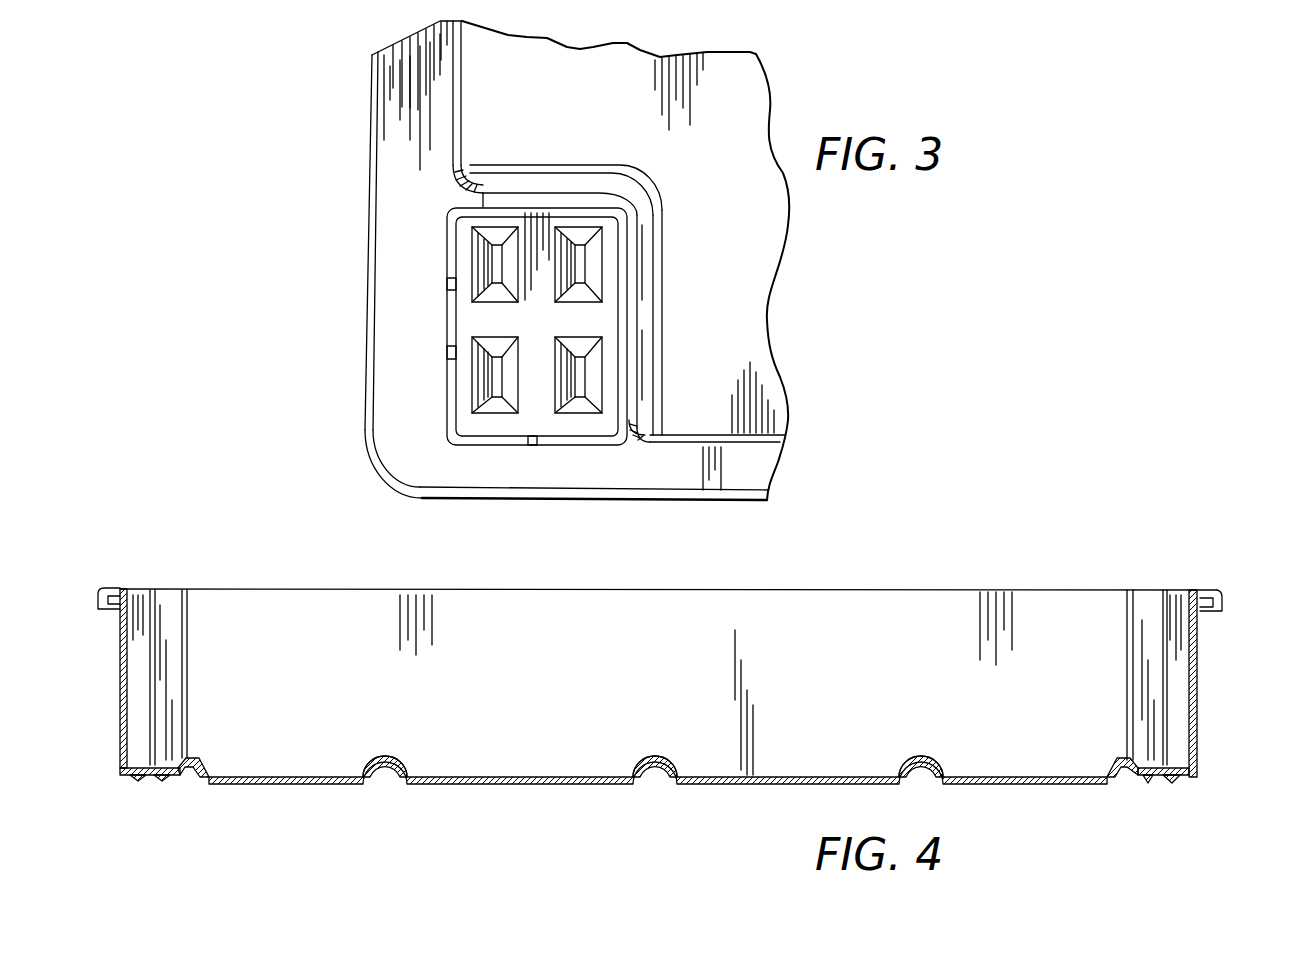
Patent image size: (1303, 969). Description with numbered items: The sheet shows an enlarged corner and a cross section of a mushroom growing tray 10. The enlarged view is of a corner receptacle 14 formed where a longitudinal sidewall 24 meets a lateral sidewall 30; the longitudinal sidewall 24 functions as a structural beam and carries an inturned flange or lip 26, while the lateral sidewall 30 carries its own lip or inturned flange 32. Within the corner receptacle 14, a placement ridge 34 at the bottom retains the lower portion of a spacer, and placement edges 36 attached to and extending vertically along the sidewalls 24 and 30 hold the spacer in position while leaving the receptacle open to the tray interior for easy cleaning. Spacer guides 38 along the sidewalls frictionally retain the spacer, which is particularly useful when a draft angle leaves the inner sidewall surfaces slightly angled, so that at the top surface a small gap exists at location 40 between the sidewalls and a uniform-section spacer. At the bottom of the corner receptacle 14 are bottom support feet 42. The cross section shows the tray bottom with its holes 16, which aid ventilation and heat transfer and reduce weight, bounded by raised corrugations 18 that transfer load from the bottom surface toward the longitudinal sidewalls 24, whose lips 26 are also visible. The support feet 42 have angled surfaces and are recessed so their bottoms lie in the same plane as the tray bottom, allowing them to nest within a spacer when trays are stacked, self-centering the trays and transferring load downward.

In FIG. 4, the tray 10 is at (970, 572).
In FIG. 3, the corner receptacle 14 is at (362, 470).
In FIG. 4, the holes 16 is at (257, 777).
In FIG. 4, the raised corrugations 18 is at (400, 768).
In FIG. 3, the longitudinal sidewalls 24 is at (457, 78).
In FIG. 4, the longitudinal sidewalls 24 is at (118, 665).
In FIG. 3, the inturned flange or lip 26 is at (316, 120).
In FIG. 4, the inturned flange or lip 26 is at (97, 590).
In FIG. 3, the lateral sidewalls 30 is at (757, 433).
In FIG. 3, the lip or inturned flange 32 is at (677, 500).
In FIG. 3, the placement ridge 34 is at (643, 208).
In FIG. 4, the placement ridge 34 is at (180, 782).
In FIG. 3, the placement edges 36 is at (468, 188).
In FIG. 4, the placement edges 36 is at (188, 648).
In FIG. 3, the spacer guides 38 is at (449, 281).
In FIG. 4, the spacer guides 38 is at (160, 602).
In FIG. 3, the gap location 40 is at (447, 412).
In FIG. 4, the bottom support feet 42 is at (162, 782).